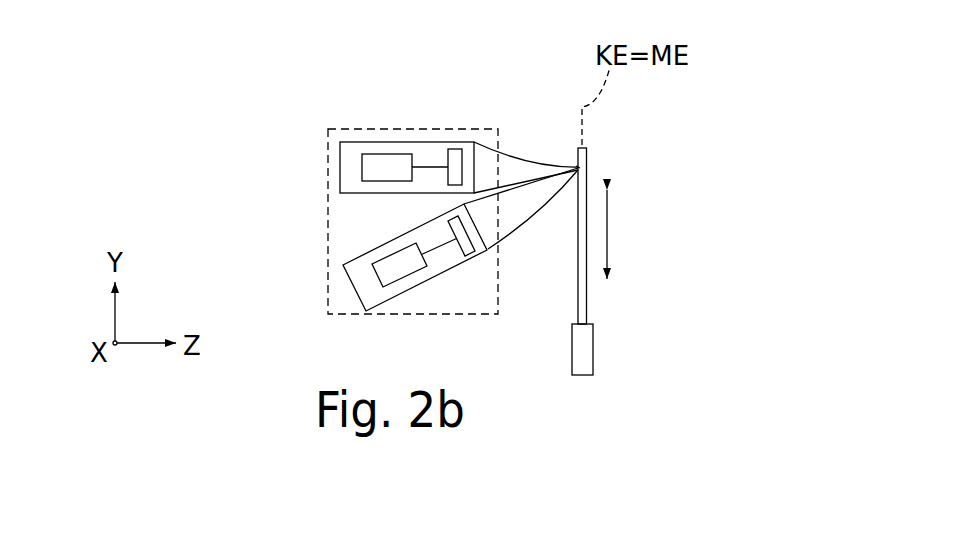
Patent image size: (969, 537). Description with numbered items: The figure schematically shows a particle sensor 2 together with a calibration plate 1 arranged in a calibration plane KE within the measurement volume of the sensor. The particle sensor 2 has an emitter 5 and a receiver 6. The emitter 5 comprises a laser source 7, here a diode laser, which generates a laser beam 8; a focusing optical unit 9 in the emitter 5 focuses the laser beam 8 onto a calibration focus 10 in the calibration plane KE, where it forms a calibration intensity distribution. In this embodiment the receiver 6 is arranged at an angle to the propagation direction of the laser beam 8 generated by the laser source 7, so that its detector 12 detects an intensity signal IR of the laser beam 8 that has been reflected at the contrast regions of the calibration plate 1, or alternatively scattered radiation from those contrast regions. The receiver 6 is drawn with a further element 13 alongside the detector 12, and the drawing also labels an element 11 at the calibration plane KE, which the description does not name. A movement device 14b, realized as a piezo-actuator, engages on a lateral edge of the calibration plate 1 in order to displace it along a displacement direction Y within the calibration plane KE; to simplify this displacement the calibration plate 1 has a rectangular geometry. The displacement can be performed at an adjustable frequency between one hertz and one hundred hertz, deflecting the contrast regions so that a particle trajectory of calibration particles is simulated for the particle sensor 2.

The particle sensor 2 is at (310, 152).
The emitter 5 is at (428, 153).
The laser source 7 is at (373, 167).
The focusing optical unit 9 is at (457, 157).
The laser beam 8 is at (520, 158).
The calibration focus 10 is at (577, 166).
The workpiece edge / object 11 is at (590, 162).
The movement device 14b is at (583, 353).
The calibration plate 1 is at (566, 307).
The receiver 6 is at (360, 268).
The detector 13 is at (393, 273).
The detector 12 is at (470, 255).